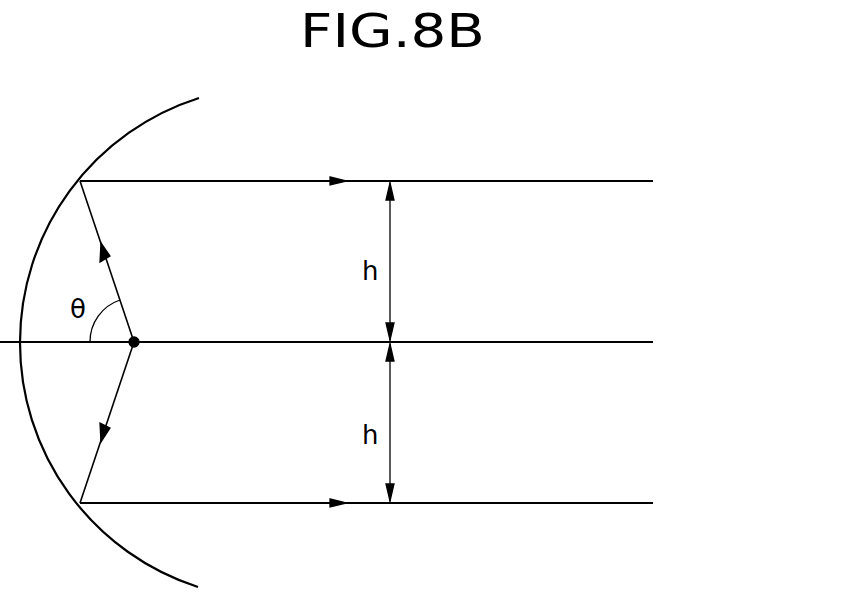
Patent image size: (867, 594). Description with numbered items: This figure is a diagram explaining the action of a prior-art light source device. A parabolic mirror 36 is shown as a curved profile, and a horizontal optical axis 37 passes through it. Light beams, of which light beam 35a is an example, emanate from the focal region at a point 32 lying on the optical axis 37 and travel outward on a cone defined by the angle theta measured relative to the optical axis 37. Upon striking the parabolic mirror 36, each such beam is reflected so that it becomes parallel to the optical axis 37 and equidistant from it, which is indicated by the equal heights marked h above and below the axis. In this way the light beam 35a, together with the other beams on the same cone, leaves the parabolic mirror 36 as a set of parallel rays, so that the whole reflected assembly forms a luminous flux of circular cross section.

The focal point 32 is at (140, 333).
The light beam 35a is at (436, 322).
The parabolic mirror 36 is at (147, 120).
The optical axis 37 is at (548, 340).